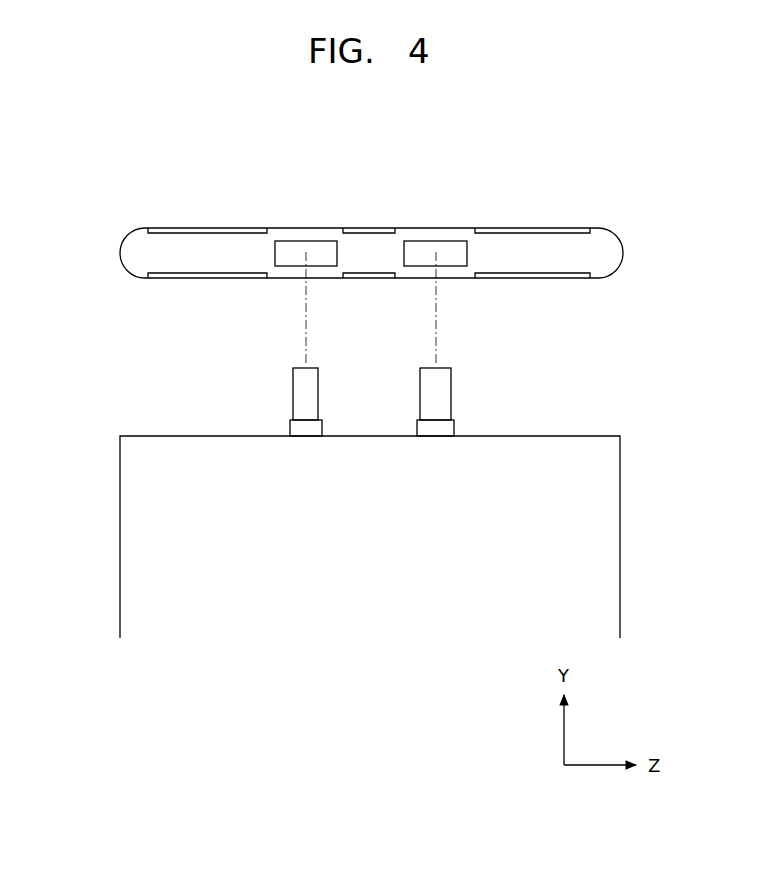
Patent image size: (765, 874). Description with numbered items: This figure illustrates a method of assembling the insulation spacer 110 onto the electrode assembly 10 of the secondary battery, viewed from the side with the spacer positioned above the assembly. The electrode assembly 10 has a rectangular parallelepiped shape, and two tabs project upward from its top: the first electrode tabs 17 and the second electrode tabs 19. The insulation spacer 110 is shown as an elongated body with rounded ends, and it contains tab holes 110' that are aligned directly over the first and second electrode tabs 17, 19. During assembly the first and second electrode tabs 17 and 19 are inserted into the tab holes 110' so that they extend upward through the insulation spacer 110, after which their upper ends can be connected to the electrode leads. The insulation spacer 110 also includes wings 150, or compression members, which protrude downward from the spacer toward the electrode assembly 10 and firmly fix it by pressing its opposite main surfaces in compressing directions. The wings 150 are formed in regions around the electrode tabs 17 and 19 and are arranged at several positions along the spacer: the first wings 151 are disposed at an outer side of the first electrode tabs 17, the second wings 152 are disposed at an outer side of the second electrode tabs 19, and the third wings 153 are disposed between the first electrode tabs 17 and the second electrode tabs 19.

The electrode assembly 10 is at (637, 519).
The first electrode tab 17 is at (297, 396).
The second electrode tab 19 is at (447, 396).
The insulation spacer 110 is at (177, 229).
The tab hole 110' is at (444, 219).
The wing 150 is at (571, 219).
The first wing 151 is at (207, 279).
The second wing 152 is at (533, 279).
The third wing 153 is at (371, 279).